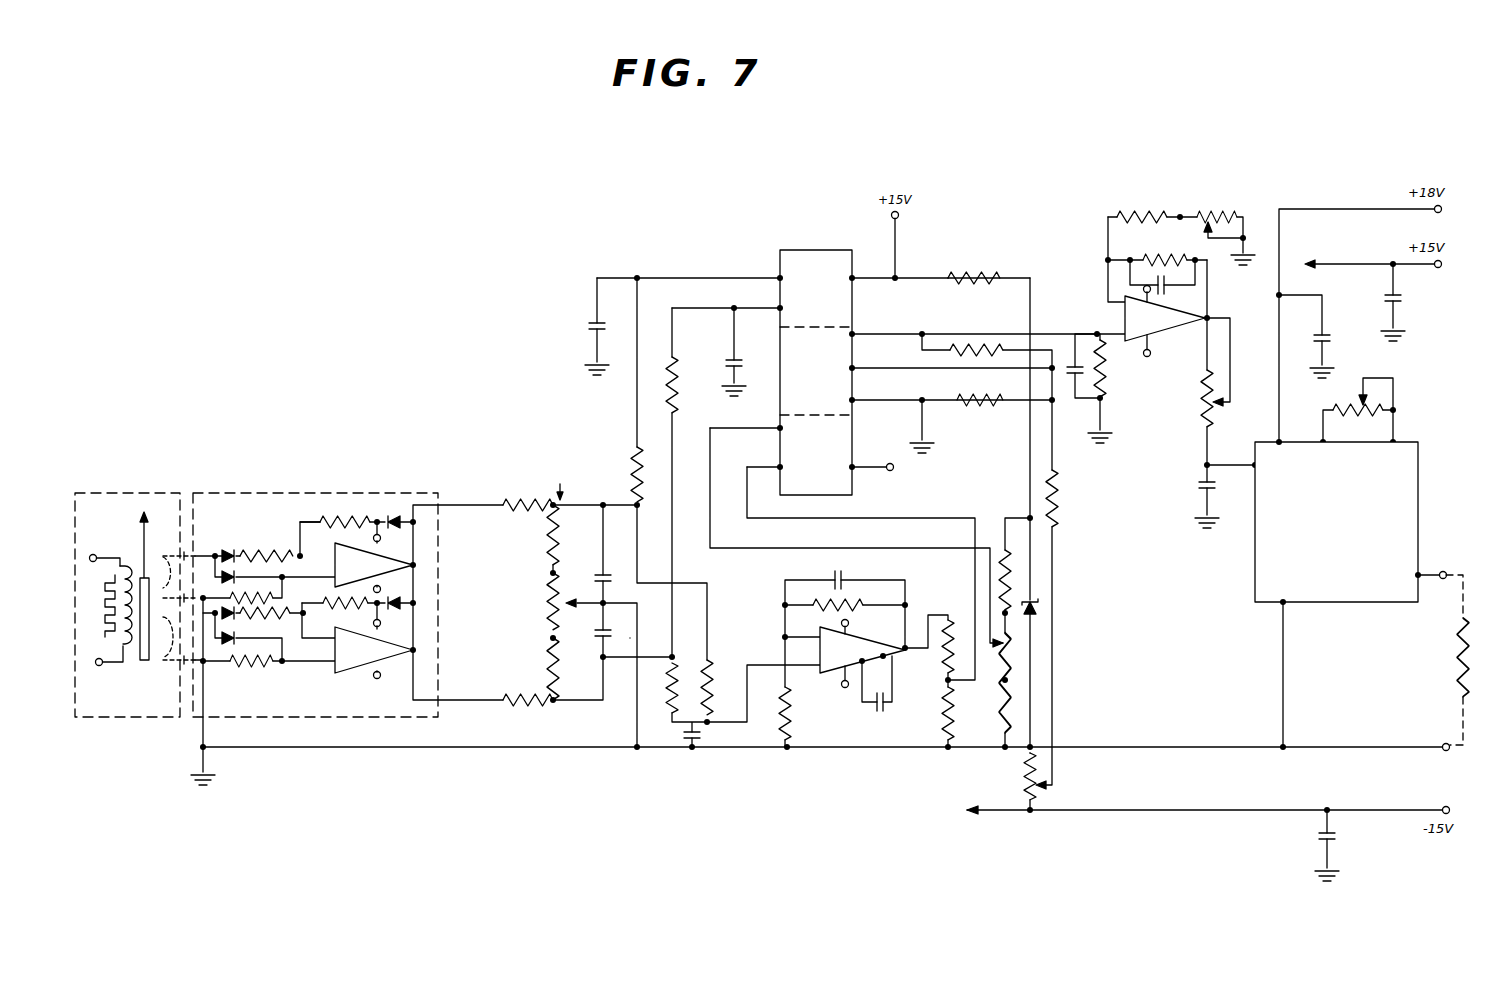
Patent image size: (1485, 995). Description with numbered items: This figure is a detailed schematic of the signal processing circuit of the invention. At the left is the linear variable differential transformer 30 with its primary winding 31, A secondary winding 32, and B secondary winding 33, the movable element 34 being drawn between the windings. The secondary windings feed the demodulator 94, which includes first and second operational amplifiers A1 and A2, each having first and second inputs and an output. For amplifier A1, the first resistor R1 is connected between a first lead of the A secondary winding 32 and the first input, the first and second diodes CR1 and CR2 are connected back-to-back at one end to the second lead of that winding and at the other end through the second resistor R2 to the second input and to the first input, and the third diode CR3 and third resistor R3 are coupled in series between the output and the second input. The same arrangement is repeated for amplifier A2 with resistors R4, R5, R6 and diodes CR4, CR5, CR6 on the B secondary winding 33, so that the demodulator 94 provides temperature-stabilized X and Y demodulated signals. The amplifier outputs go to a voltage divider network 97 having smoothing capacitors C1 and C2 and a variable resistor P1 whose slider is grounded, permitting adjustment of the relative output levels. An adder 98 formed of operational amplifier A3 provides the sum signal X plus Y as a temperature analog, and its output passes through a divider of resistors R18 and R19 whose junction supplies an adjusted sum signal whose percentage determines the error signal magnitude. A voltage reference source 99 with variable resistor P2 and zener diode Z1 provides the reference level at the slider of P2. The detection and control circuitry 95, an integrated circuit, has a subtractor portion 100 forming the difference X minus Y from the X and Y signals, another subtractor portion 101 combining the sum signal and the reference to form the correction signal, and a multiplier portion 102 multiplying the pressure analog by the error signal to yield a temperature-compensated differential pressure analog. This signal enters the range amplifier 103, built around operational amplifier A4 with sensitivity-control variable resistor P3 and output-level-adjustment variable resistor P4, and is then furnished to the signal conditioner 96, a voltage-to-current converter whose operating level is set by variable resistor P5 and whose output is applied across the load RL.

The linear variable differential transformer 30 is at (148, 490).
The primary winding 31 is at (132, 564).
The A secondary winding 32 is at (157, 545).
The B secondary winding 33 is at (172, 619).
The movable core 34 is at (142, 662).
The demodulator 94 is at (248, 490).
The first diode CR1 is at (228, 551).
The second diode CR2 is at (234, 572).
The third diode CR3 is at (404, 518).
The first diode CR4 is at (231, 620).
The second diode CR5 is at (239, 645).
The third diode CR6 is at (405, 597).
The first resistor R1 is at (233, 596).
The second resistor R2 is at (280, 552).
The third resistor R3 is at (342, 513).
The first resistor R4 is at (260, 664).
The second resistor R5 is at (277, 616).
The third resistor R6 is at (323, 603).
The first operational amplifier A1 is at (374, 565).
The second operational amplifier A2 is at (374, 650).
The voltage divider network 97 is at (474, 500).
The variable resistor P1 is at (547, 605).
The smoothing capacitor C1 is at (593, 575).
The smoothing capacitor C2 is at (593, 645).
The detection and control circuitry 95 is at (792, 249).
The subtractor portion 100 is at (848, 250).
The multiplier portion 102 is at (856, 351).
The subtractor portion 101 is at (856, 434).
The range amplifier 103 is at (1093, 327).
The operational amplifier A4 is at (1157, 329).
The sensitivity-control variable resistor P3 is at (1210, 212).
The output-level-adjustment variable resistor P4 is at (1201, 408).
The variable resistor P5 is at (1368, 420).
The signal conditioner 96 is at (1255, 592).
The load RL is at (1460, 660).
The adder 98 is at (772, 629).
The operational amplifier A3 is at (858, 664).
The resistor R18 is at (946, 665).
The resistor R19 is at (946, 718).
The zener diode Z1 is at (1038, 605).
The variable resistor P2 is at (1012, 643).
The voltage reference source 99 is at (1050, 676).